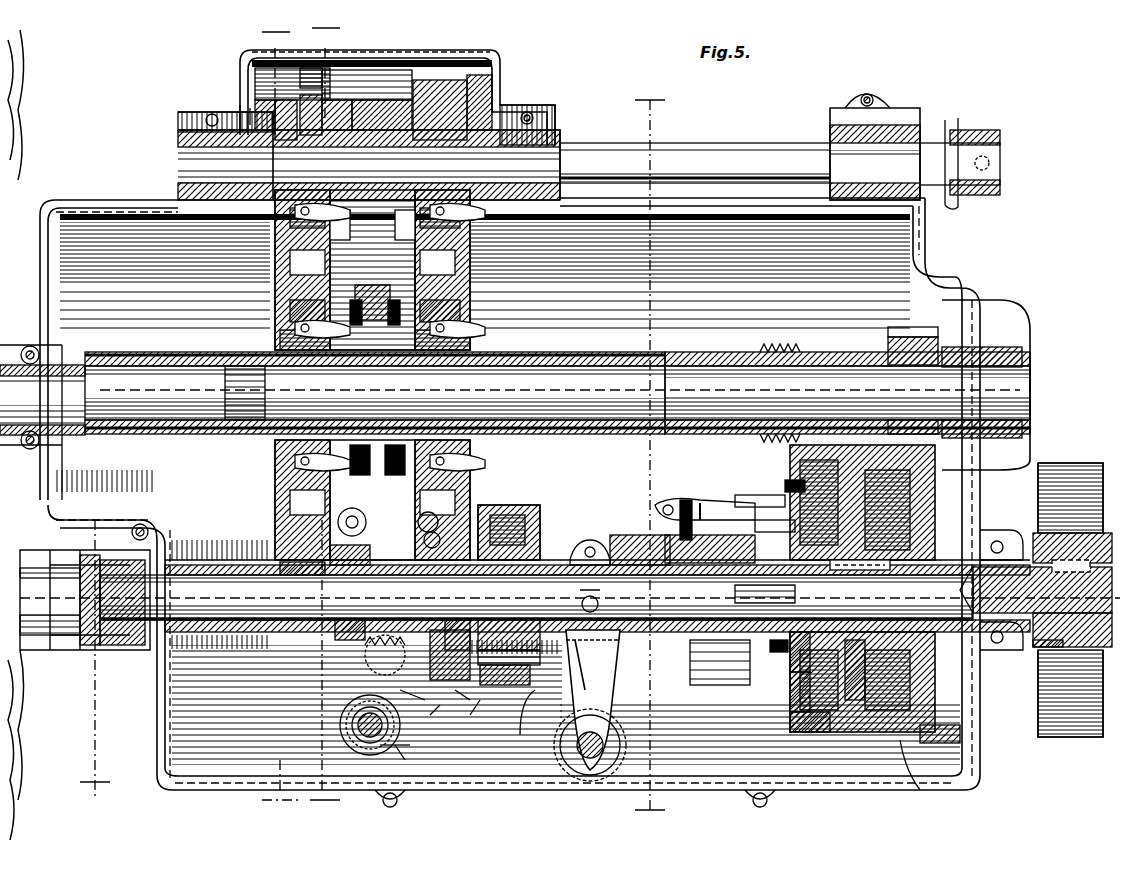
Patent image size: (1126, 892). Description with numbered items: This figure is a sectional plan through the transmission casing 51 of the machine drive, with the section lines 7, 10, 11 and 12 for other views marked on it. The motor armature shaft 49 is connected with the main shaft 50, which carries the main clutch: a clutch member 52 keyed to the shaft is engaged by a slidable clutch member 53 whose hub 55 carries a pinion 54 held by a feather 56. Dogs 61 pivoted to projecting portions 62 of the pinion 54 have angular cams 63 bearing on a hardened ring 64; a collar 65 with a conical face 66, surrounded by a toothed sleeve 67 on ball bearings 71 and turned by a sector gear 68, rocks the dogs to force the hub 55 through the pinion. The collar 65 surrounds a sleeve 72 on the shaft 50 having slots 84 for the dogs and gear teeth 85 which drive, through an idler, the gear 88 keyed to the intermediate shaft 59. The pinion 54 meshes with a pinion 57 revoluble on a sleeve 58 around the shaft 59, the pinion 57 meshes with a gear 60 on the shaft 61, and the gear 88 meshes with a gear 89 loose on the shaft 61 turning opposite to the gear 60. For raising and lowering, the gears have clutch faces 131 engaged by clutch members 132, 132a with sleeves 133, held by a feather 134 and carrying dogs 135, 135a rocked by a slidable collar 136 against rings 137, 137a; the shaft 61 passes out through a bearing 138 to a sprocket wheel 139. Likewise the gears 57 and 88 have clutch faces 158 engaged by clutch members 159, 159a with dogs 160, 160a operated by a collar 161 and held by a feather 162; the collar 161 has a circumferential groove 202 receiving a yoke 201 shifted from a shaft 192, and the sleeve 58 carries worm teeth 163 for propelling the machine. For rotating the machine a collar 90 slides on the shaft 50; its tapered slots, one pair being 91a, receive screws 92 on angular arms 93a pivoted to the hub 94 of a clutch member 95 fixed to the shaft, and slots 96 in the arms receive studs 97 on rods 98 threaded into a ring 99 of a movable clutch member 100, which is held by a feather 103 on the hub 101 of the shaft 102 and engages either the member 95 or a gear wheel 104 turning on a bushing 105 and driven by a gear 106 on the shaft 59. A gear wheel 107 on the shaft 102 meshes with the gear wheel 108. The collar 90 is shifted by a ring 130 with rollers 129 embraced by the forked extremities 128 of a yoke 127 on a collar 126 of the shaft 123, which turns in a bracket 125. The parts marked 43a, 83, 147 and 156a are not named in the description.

The section line 7— 7 is at (611, 446).
The section line 10— 10 is at (281, 790).
The section line 11— 11 is at (185, 415).
The section line 12— 12 is at (326, 413).
The arm 43a is at (715, 683).
The armature shaft 49 is at (0, 600).
The main shaft 50 is at (612, 670).
The casing 51 is at (950, 285).
The clutch member 52 is at (505, 690).
The slidable clutch member 53 is at (469, 718).
The pinion 54 is at (445, 660).
The hub 55 is at (462, 620).
The feather 56 is at (500, 620).
The pinion 57 is at (495, 505).
The sleeve 58 is at (610, 360).
The intermediate shaft 59 is at (805, 385).
The gear 60 is at (470, 105).
The shaft 61 is at (715, 160).
The projecting portions 62 is at (400, 555).
The angular cams 63 is at (429, 563).
The hardened metal ring 64 is at (340, 740).
The collar 65 is at (355, 595).
The conical face 66 is at (325, 570).
The sleeve 67 is at (455, 704).
The sector gear 68 is at (340, 718).
The ball bearings 71 is at (340, 660).
The sleeve 72 is at (290, 525).
The hub 83 is at (345, 730).
The slots 84 is at (365, 565).
The gear teeth 85 is at (280, 565).
The gear 88 is at (275, 300).
The gear 89 is at (240, 112).
The collar 90 is at (700, 575).
The tapered slot 91a is at (705, 494).
The screws 92 is at (655, 512).
The angular arm 93a is at (750, 500).
The hub 94 is at (745, 575).
The clutch member 95 is at (790, 725).
The slots 96 is at (790, 480).
The studs 97 is at (755, 525).
The rods 98 is at (830, 565).
The ring 99 is at (790, 684).
The movable clutch member 100 is at (790, 700).
The hub 101 is at (869, 670).
The shaft 102 is at (1030, 640).
The feather 103 is at (860, 570).
The gear wheel 104 is at (915, 745).
The bushing 105 is at (1015, 560).
The gear 106 is at (905, 350).
The gear wheel 107 is at (1045, 650).
The gear wheel 108 is at (1038, 495).
The shaft 123 is at (592, 760).
The bracket 125 is at (520, 718).
The collar 126 is at (615, 735).
The yoke 127 is at (612, 682).
The forked extremities 128 is at (625, 545).
The rollers 129 is at (605, 596).
The ring 130 is at (580, 552).
The clutch face 131 is at (450, 70).
The clutch member 132 is at (420, 90).
The clutch member 132a is at (310, 70).
The sleeve 133 is at (425, 130).
The feather 134 is at (372, 130).
The dogs 135 is at (310, 140).
The dogs 135a is at (265, 132).
The slidable collar 136 is at (380, 95).
The ring 137 is at (480, 135).
The ring 137a is at (285, 135).
The bearing 138 is at (830, 130).
The sprocket wheel 139 is at (975, 143).
The pin 147 is at (433, 720).
The ring 156a is at (285, 265).
The clutch face 158 is at (465, 290).
The clutch member 159 is at (470, 310).
The clutch member 159a is at (290, 315).
The dogs 160 is at (468, 335).
The dogs 160a is at (215, 470).
The collar 161 is at (375, 300).
The feather 162 is at (400, 365).
The worm teeth 163 is at (780, 352).
The shaft 192 is at (418, 746).
The yoke 201 is at (377, 480).
The circumferential groove 202 is at (375, 304).